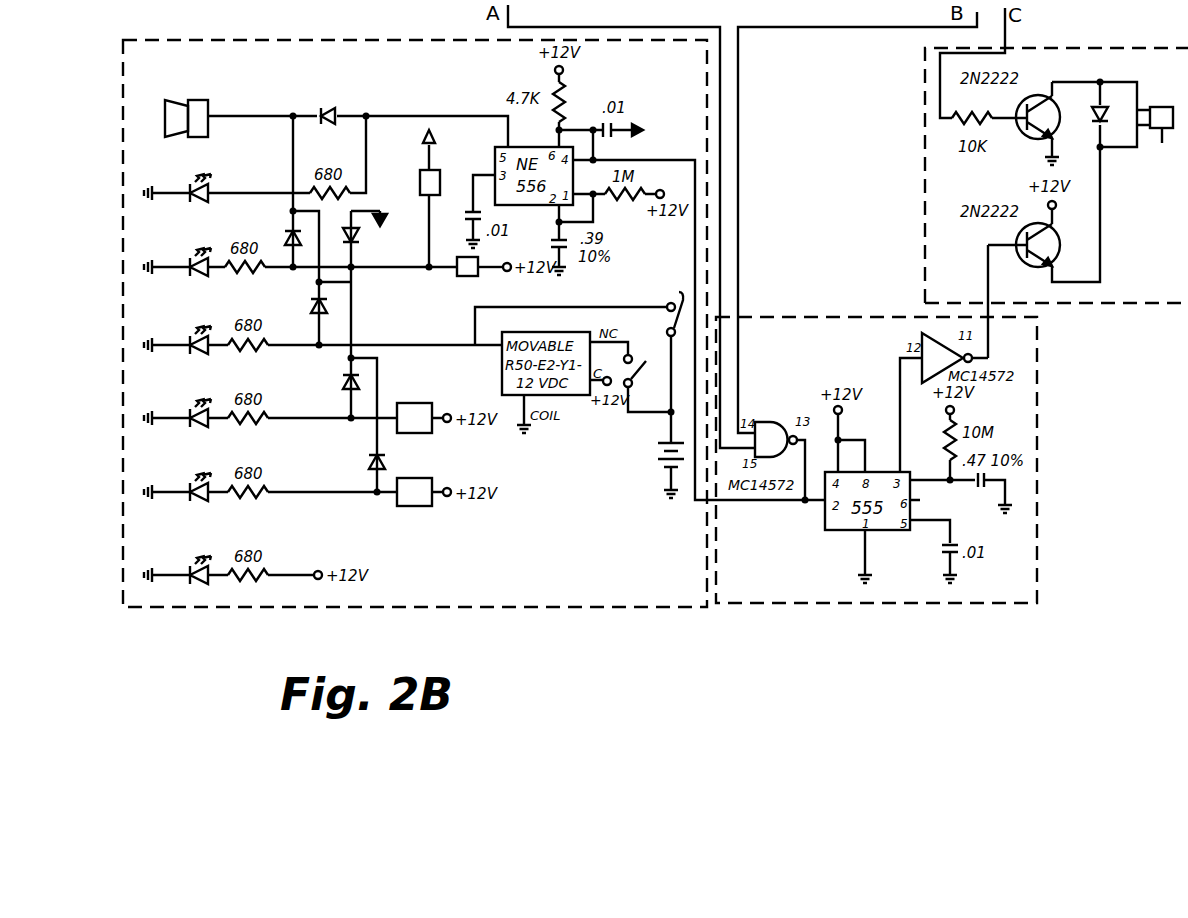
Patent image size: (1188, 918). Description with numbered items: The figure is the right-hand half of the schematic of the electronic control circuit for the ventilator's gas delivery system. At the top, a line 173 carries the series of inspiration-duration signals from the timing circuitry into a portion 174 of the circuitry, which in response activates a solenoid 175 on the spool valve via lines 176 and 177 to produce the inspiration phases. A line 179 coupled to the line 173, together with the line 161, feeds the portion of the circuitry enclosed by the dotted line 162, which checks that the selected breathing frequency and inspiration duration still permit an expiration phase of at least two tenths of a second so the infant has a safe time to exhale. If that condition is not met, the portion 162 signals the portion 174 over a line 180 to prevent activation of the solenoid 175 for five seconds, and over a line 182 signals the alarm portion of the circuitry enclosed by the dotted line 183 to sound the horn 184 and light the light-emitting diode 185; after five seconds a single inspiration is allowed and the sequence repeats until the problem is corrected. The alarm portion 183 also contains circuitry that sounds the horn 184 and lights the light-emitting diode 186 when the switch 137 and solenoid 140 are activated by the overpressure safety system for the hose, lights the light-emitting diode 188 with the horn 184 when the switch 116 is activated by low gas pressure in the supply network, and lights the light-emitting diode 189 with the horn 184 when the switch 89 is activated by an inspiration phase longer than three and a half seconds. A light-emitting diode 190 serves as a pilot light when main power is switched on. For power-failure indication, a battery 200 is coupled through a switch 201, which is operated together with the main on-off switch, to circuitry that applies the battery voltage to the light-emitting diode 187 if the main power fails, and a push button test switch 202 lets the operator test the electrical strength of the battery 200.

The horn 184 is at (215, 82).
The light-emitting diode 185 is at (199, 205).
The light-emitting diode 186 is at (193, 280).
The light-emitting diode 187 is at (197, 356).
The light-emitting diode 188 is at (200, 430).
The light-emitting diode 189 is at (196, 505).
The light-emitting diode 190 is at (196, 587).
The alarm portion 183 is at (212, 611).
The solenoid 140 is at (440, 178).
The switch 137 is at (462, 278).
The switch 116 is at (423, 403).
The switch 89 is at (415, 507).
The line 182 is at (675, 159).
The conductor A 161 is at (643, 31).
The line 179 is at (857, 29).
The line 173 is at (1012, 41).
The portion of the circuitry 174 is at (1130, 306).
The solenoid 175 is at (1161, 140).
The line 176 is at (1127, 82).
The line 177 is at (1121, 150).
The line 180 is at (988, 263).
The battery 200 is at (656, 470).
The switch 201 is at (650, 386).
The push button test switch 202 is at (666, 304).
The portion of the circuitry 162 is at (937, 606).